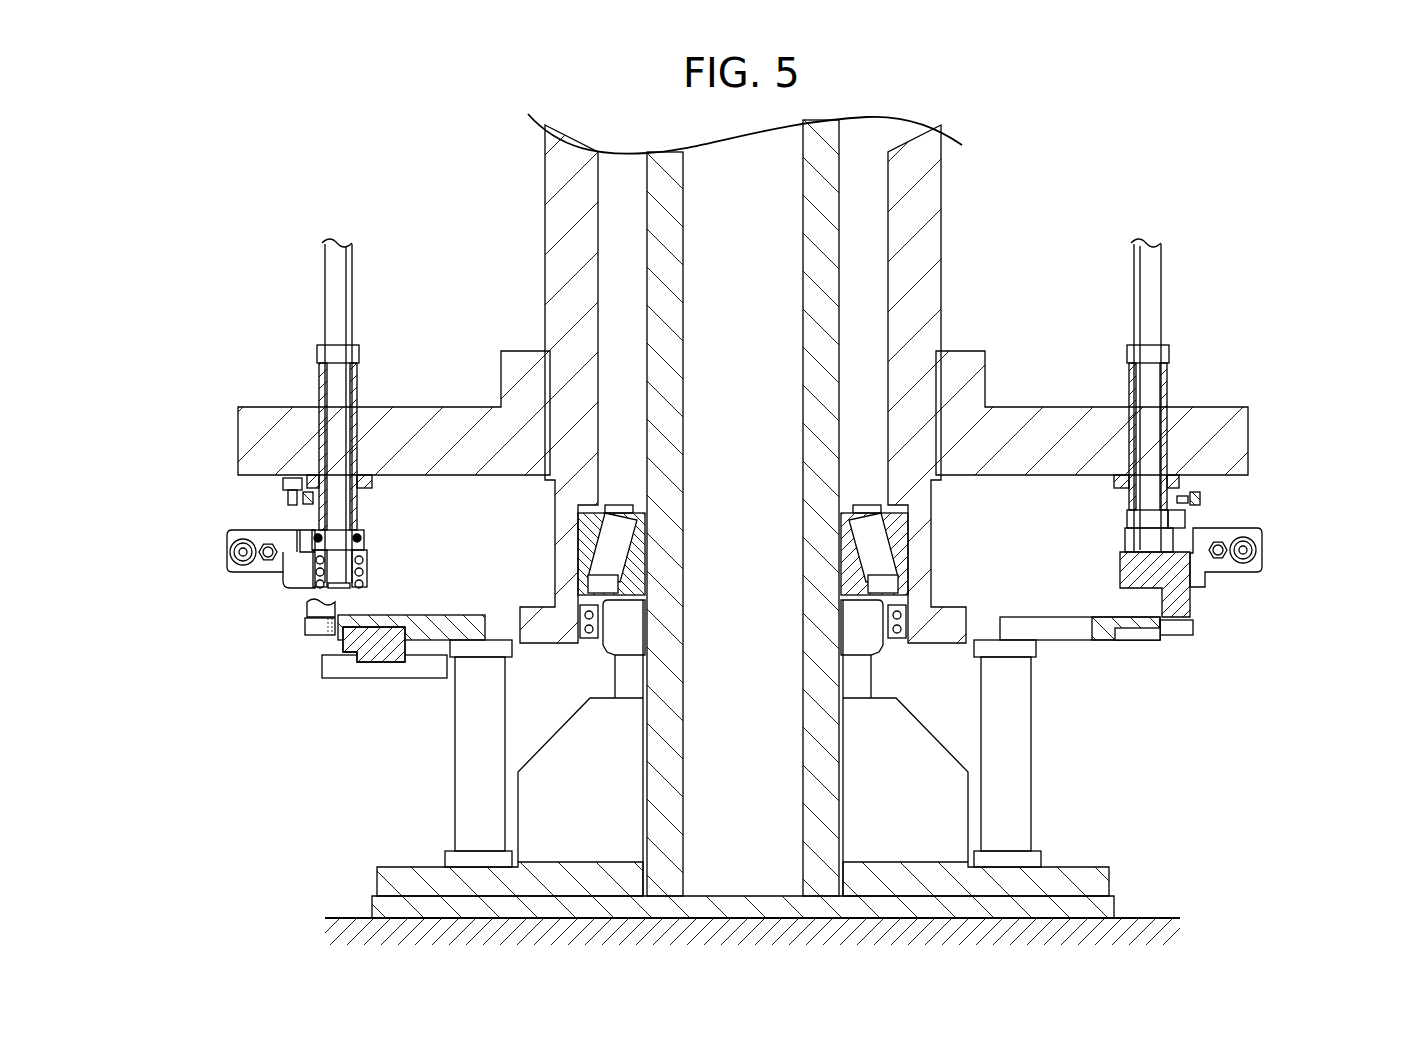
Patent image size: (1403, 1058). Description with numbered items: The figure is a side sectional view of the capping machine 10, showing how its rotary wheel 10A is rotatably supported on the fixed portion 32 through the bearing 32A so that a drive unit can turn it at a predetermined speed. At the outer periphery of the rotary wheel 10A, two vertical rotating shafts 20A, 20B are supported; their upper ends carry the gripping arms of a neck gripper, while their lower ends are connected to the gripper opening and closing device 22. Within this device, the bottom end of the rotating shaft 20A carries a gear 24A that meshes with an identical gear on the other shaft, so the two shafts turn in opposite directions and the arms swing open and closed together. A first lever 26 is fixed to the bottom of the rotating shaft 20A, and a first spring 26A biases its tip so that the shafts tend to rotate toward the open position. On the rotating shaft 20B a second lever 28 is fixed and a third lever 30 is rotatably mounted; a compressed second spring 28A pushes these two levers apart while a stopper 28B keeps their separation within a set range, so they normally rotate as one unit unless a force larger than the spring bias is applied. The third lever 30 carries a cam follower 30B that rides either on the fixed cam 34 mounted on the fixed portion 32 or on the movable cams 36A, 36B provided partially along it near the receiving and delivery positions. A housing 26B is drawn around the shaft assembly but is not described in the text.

The capping machine 10 is at (1272, 927).
The rotary wheel 10A is at (416, 402).
The rotating shaft 20A is at (1160, 273).
The rotating shaft 20B is at (347, 273).
The gripper opening and closing device 22 is at (254, 604).
The gear 24A is at (1125, 533).
The first lever 26 is at (1185, 520).
The first spring 26A is at (307, 477).
The sleeve bearing housing 26B is at (364, 534).
The second lever 28 is at (262, 536).
The second spring 28A is at (229, 533).
The stopper 28B is at (270, 562).
The third lever 30 is at (297, 578).
The cam follower 30B is at (314, 635).
The fixed portion 32 is at (413, 867).
The bearing 32A is at (645, 538).
The fixed cam 34 is at (455, 615).
The movable cam 36A is at (372, 652).
The movable cam 36B is at (393, 677).